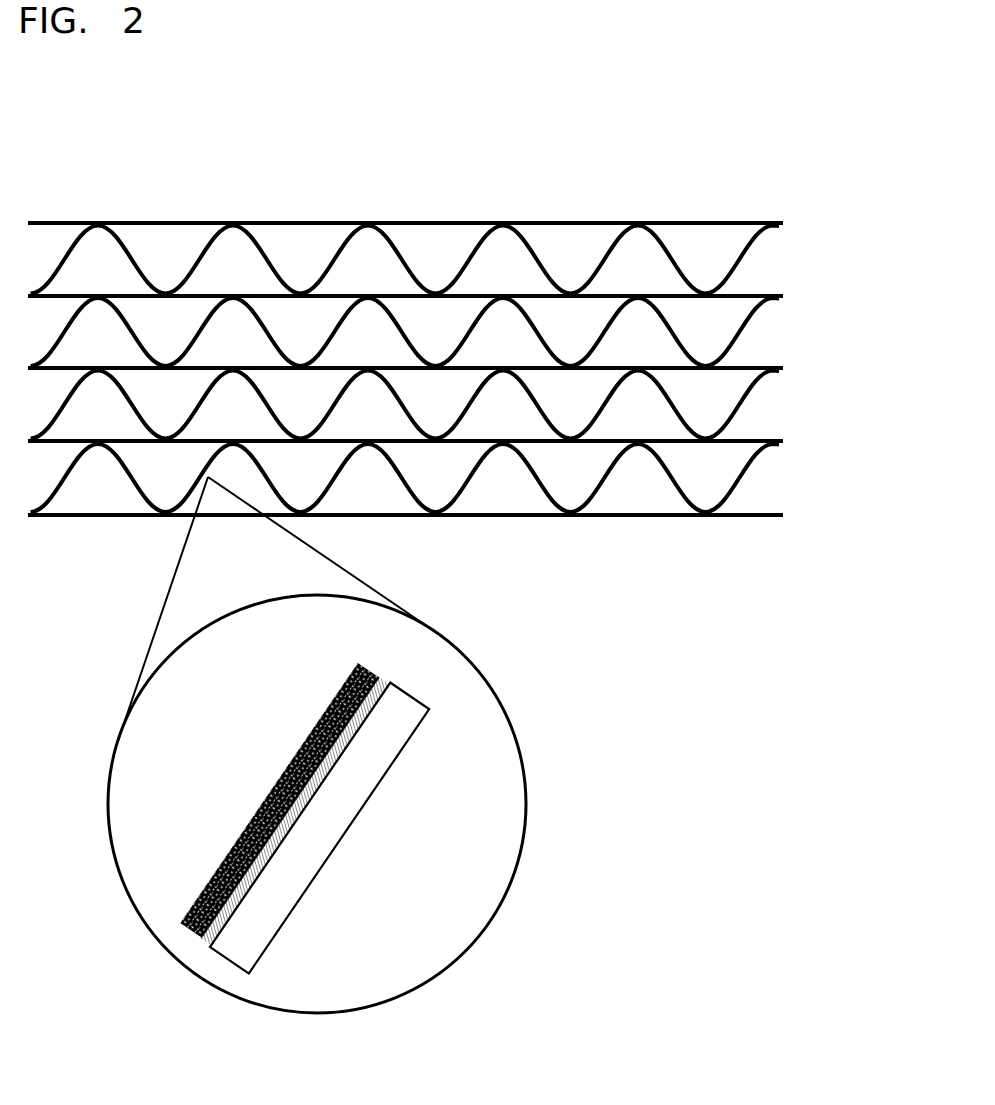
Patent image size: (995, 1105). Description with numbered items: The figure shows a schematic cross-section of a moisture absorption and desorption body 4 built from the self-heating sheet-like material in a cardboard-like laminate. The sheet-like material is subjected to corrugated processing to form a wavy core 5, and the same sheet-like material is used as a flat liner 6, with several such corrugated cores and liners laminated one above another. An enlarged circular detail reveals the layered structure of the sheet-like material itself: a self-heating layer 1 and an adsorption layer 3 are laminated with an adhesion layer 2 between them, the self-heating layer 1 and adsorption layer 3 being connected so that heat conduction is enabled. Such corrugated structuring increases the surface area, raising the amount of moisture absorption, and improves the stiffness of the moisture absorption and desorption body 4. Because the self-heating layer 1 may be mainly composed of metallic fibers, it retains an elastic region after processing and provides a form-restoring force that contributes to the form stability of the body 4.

The self-heating layer 1 is at (288, 767).
The adhesion layer 2 is at (393, 687).
The adsorption layer 3 is at (350, 827).
The moisture absorption and desorption body 4 is at (412, 192).
The core 5 is at (750, 328).
The liner 6 is at (522, 517).